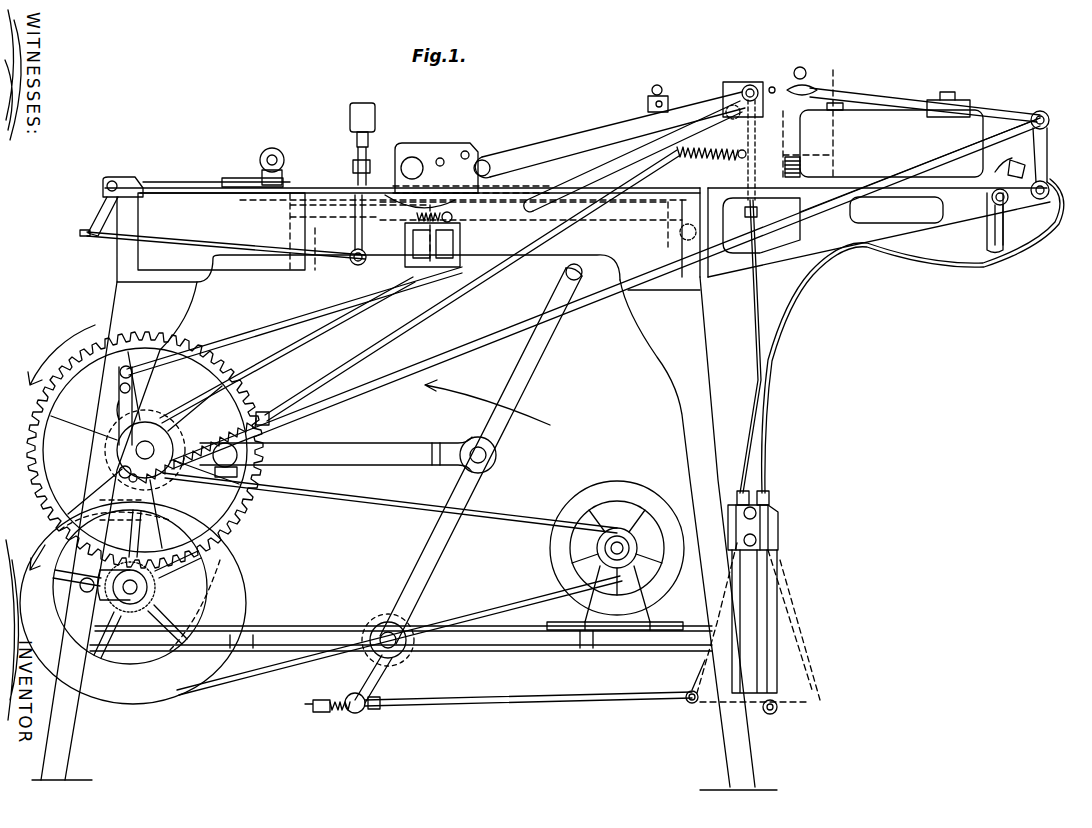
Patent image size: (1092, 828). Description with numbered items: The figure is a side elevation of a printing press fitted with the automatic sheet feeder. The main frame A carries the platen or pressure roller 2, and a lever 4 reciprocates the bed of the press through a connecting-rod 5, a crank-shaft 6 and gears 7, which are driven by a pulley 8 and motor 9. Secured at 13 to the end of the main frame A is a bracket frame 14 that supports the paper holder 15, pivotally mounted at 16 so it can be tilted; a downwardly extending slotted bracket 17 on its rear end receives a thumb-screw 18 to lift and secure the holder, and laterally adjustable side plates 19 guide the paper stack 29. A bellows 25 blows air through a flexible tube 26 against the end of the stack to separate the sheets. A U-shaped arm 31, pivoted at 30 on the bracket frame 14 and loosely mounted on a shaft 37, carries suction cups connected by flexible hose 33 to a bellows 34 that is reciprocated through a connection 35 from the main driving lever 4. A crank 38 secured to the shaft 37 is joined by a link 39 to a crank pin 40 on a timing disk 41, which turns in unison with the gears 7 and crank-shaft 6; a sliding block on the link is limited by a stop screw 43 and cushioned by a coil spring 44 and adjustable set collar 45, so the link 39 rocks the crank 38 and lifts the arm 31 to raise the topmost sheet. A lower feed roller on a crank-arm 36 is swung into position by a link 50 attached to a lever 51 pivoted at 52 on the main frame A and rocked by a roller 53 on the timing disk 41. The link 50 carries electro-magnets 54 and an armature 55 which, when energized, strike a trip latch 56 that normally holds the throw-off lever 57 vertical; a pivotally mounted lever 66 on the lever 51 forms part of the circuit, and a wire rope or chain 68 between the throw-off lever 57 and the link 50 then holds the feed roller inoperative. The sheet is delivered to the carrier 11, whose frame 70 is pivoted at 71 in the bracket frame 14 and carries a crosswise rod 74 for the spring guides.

The main frame A is at (404, 483).
The platen or pressure roller 2 is at (412, 158).
The lever 4 is at (838, 90).
The connecting-rod 5 is at (348, 455).
The crank-shaft 6 is at (118, 448).
The gears 7 is at (236, 492).
The pulley 8 is at (133, 603).
The motor 9 is at (620, 480).
The carrier 11 is at (609, 135).
The securing point 13 is at (702, 280).
The bracket frame 14 is at (797, 250).
The paper holder 15 is at (896, 210).
The pivot 16 is at (761, 225).
The slotted bracket 17 is at (985, 230).
The thumb-screw 18 is at (976, 223).
The side plates 19 is at (883, 125).
The bellows 25 is at (775, 574).
The flexible tube 26 is at (741, 296).
The paper stack 29 is at (802, 160).
The pivot 30 is at (1055, 218).
The U-shaped arm 31 is at (929, 107).
The flexible hose 33 is at (800, 290).
The bellows 34 is at (690, 690).
The connection 35 is at (498, 694).
The crank-arm 36 is at (788, 77).
The shaft 37 is at (1050, 190).
The crank 38 is at (1048, 160).
The link 39 is at (605, 293).
The crank pin 40 is at (170, 482).
The timing disk 41 is at (160, 428).
The stop screw 43 is at (142, 478).
The coil spring 44 is at (240, 455).
The adjustable set collar 45 is at (272, 425).
The link 50 is at (602, 188).
The lever 51 is at (100, 513).
The pivot 52 is at (80, 583).
The roller 53 is at (118, 470).
The electro-magnets 54 is at (436, 268).
The armature 55 is at (445, 210).
The trip latch 56 is at (226, 239).
The throw-off lever 57 is at (362, 104).
The pivotally mounted lever 66 is at (149, 405).
The wire rope or chain 68 is at (420, 192).
The frame 70 is at (605, 148).
The pivot 71 is at (743, 89).
The rod 74 is at (657, 96).